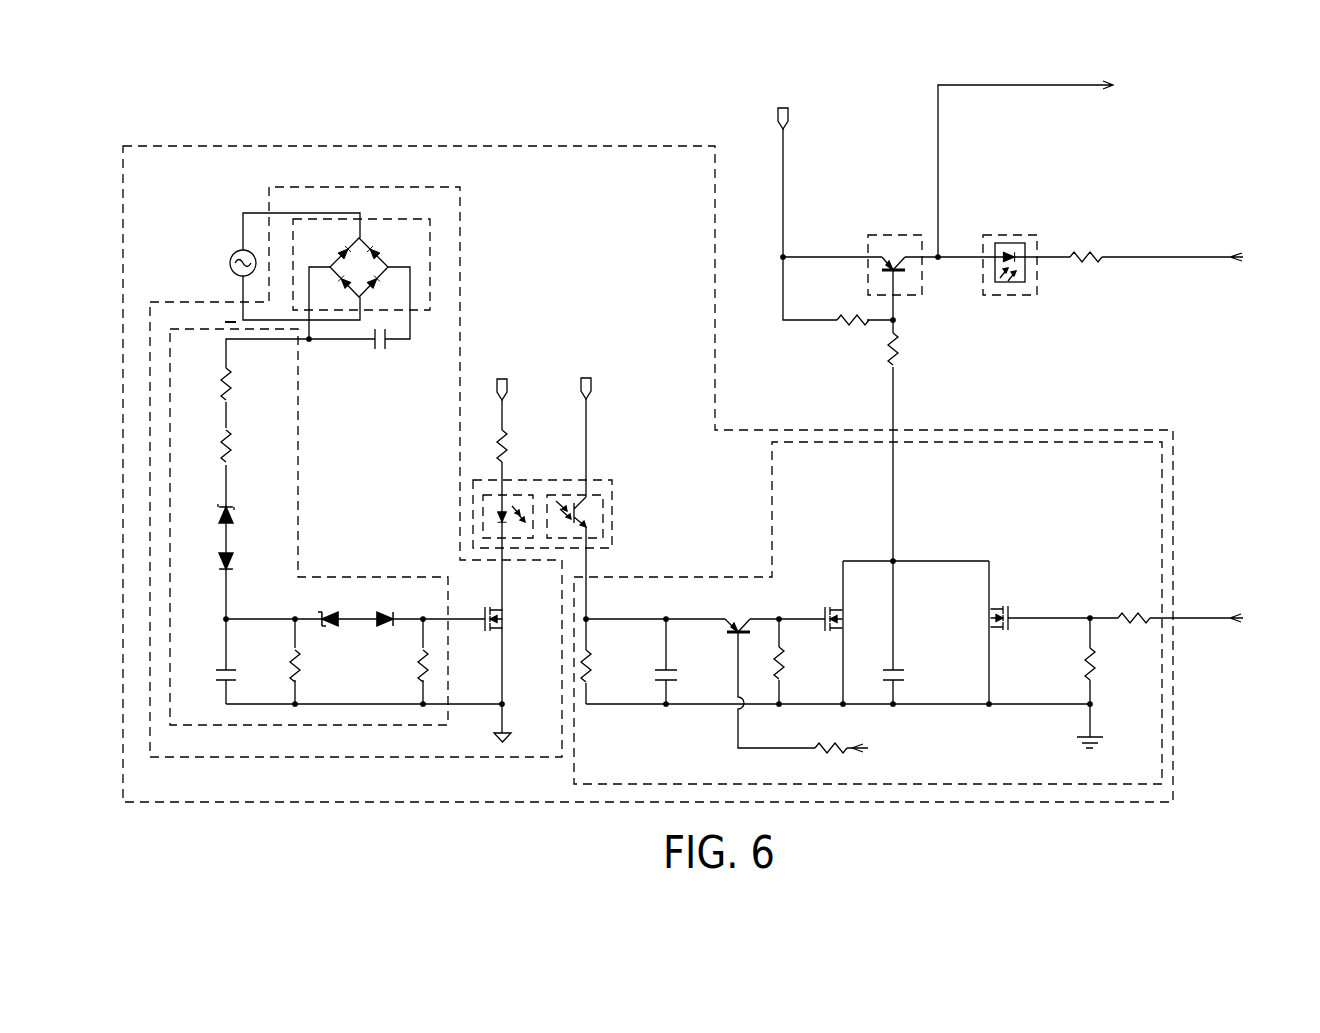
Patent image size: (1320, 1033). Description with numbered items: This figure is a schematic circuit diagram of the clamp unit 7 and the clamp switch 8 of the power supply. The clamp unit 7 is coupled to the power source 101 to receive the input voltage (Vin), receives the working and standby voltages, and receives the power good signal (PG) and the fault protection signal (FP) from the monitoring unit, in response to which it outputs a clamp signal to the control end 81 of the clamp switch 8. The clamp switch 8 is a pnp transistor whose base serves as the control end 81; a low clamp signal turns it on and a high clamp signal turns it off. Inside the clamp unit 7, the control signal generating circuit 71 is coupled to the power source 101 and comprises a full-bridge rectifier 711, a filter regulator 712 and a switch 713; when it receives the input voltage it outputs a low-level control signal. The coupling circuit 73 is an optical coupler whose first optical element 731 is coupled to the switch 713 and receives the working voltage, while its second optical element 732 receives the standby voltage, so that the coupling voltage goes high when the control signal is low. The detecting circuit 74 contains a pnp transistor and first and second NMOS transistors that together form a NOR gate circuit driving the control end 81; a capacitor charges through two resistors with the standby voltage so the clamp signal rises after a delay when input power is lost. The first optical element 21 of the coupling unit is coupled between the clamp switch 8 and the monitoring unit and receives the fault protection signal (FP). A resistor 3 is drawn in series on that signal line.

The power source 101 is at (235, 252).
The clamp unit 7 is at (1175, 725).
The control signal generating circuit 71 is at (307, 760).
The full-bridge rectifier 711 is at (432, 243).
The filter regulator 712 is at (370, 727).
The switch 713 is at (503, 627).
The coupling circuit 73 is at (613, 513).
The first optical element 731 is at (525, 487).
The second optical element 732 is at (597, 487).
The detecting circuit 74 is at (1042, 784).
The clamp switch 8 is at (895, 233).
The control end 81 is at (895, 307).
The first optical element 21 is at (1008, 233).
The resistor 3 is at (1085, 253).